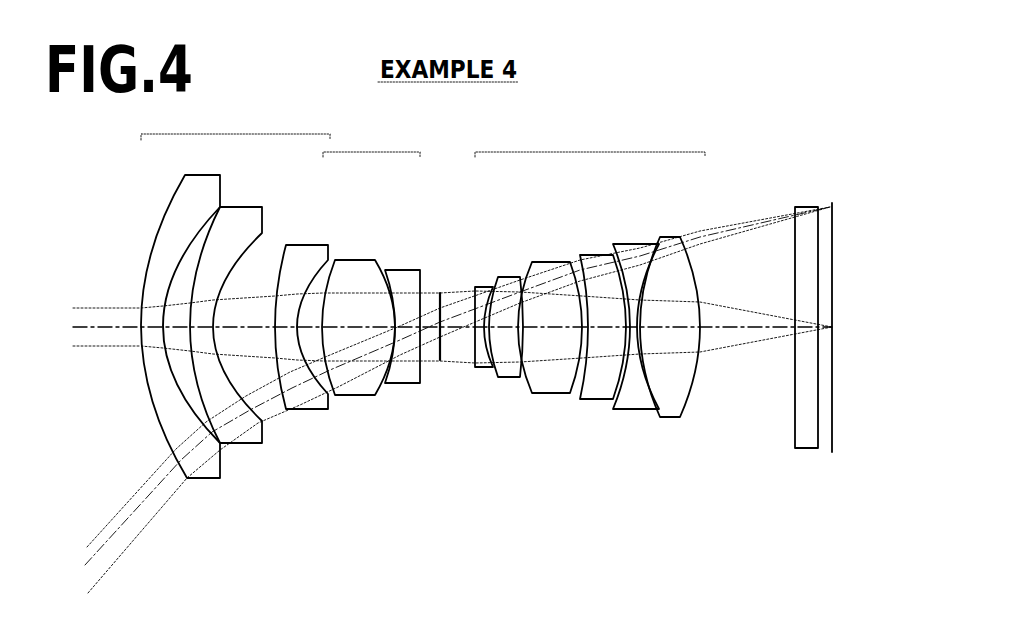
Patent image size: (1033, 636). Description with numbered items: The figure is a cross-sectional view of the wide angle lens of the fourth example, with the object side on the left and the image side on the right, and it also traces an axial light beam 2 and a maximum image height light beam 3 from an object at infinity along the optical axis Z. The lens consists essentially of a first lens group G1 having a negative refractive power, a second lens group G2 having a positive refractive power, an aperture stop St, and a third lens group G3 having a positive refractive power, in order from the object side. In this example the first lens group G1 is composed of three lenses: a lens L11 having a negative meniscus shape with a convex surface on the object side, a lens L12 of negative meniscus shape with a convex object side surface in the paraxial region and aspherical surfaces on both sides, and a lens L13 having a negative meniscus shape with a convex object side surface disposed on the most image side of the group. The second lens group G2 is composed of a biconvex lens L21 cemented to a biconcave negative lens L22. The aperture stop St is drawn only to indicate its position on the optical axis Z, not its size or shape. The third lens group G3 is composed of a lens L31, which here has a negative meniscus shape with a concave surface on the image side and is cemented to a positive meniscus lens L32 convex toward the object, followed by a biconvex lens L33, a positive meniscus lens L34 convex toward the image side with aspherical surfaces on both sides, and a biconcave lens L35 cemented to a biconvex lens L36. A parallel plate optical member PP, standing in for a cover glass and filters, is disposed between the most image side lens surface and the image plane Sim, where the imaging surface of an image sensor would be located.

The axial light beam 2 is at (68, 297).
The maximum image height light beam 3 is at (84, 540).
The optical axis Z is at (108, 325).
The first lens group G1 is at (235, 125).
The second lens group G2 is at (371, 142).
The third lens group G3 is at (590, 142).
The lens L11 is at (203, 480).
The lens L12 is at (247, 445).
The lens L13 is at (308, 411).
The lens L21 is at (359, 397).
The negative lens L22 is at (405, 385).
The aperture stop St is at (438, 292).
The lens L31 is at (482, 370).
The lens L32 is at (509, 379).
The lens L33 is at (553, 395).
The lens L34 is at (597, 401).
The lens L35 is at (636, 411).
The lens L36 is at (671, 419).
The optical member PP is at (796, 207).
The image plane Sim is at (834, 203).